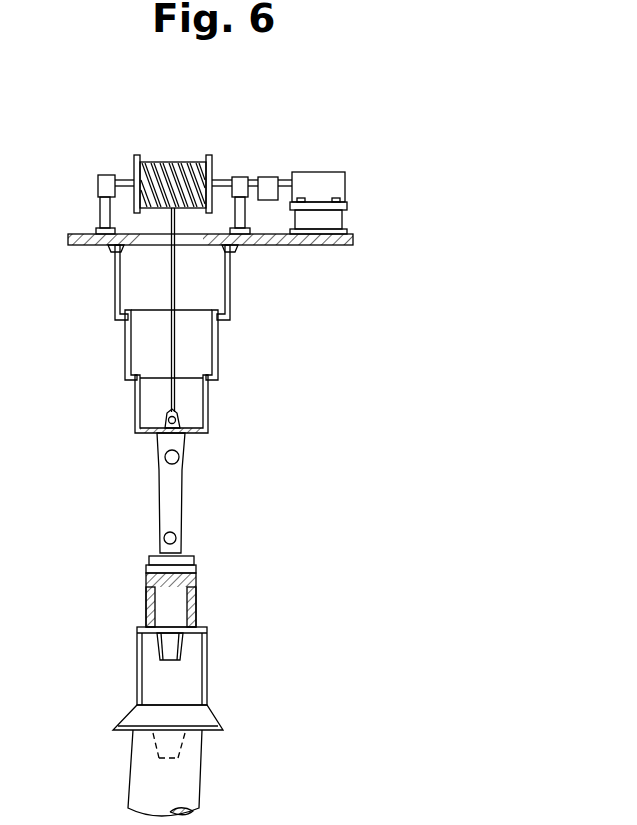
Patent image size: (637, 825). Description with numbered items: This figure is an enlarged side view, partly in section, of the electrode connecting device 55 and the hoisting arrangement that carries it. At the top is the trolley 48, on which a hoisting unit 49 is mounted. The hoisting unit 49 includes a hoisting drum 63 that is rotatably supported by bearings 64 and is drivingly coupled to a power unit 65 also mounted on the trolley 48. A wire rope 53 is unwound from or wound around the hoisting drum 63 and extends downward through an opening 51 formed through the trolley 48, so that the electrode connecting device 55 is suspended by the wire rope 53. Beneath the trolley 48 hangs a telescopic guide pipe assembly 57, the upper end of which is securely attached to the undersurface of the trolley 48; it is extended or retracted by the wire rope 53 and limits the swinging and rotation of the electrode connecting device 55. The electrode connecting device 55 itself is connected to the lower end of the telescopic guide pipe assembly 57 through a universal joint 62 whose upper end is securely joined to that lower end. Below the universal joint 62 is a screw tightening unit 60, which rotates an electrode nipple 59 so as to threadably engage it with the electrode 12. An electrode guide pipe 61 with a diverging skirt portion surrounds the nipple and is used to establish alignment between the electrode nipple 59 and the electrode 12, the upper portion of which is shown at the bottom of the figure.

The electrode 12 is at (183, 777).
The trolley 48 is at (317, 245).
The hoisting unit 49 is at (302, 128).
The opening 51 is at (145, 238).
The wire rope 53 is at (170, 339).
The electrode connecting device 55 is at (250, 566).
The telescopic guide pipe assembly 57 is at (133, 396).
The electrode nipple 59 is at (172, 645).
The screw tightening unit 60 is at (178, 607).
The electrode guide pipe 61 is at (212, 716).
The universal joint 62 is at (178, 487).
The hoisting drum 63 is at (147, 160).
The bearings 64 is at (98, 184).
The power unit 65 is at (330, 182).